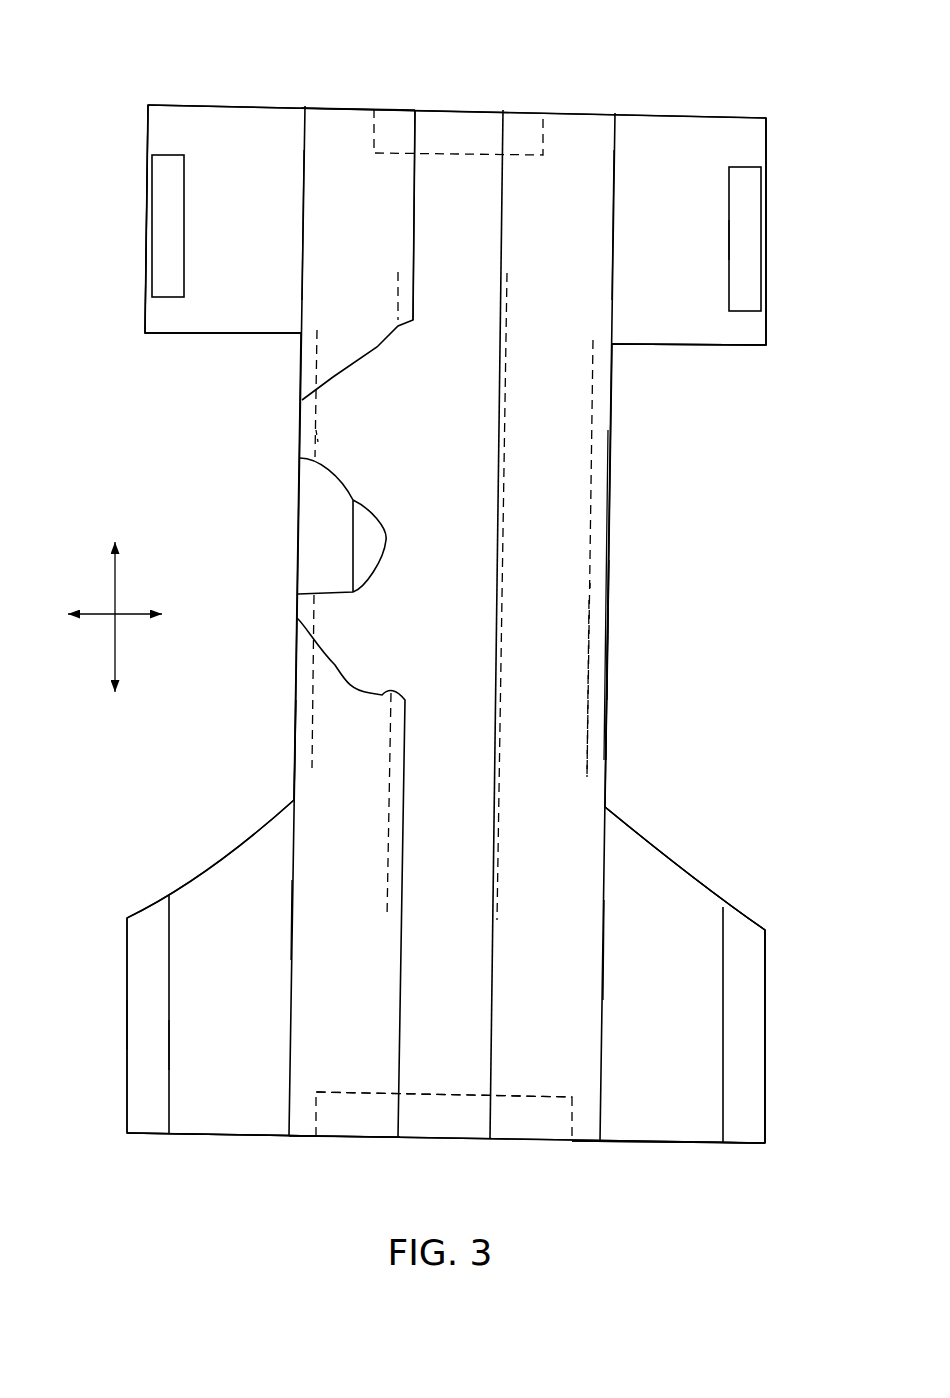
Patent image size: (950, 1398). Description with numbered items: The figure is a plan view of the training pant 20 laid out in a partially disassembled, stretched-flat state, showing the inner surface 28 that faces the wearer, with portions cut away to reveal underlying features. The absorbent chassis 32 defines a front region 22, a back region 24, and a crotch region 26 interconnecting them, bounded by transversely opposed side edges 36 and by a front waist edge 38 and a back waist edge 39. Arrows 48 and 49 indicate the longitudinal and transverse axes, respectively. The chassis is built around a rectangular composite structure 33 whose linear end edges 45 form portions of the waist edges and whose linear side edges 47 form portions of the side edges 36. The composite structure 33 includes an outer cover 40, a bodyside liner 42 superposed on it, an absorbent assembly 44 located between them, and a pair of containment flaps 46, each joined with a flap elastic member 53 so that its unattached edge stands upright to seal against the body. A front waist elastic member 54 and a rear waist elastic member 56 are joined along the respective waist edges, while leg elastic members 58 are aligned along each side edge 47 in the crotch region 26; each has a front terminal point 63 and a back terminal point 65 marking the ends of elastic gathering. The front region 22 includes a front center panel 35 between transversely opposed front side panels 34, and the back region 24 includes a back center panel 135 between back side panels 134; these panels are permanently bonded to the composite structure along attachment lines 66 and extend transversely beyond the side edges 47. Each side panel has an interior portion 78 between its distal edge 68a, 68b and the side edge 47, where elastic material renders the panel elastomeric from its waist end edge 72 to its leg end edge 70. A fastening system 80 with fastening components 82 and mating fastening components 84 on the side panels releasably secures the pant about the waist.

The training pant 20 is at (219, 105).
The front region 22 is at (146, 153).
The back region 24 is at (740, 890).
The crotch region 26 is at (618, 677).
The inner surface 28 is at (650, 1142).
The absorbent chassis 32 is at (607, 648).
The rectangular composite structure 33 is at (612, 223).
The front side panels 34 is at (723, 142).
The front center panel 35 is at (387, 182).
The side edges 36 is at (295, 720).
The front waist edge 38 is at (357, 107).
The back waist edge 39 is at (305, 1137).
The outer cover 40 is at (347, 585).
The bodyside liner 42 is at (407, 447).
The absorbent assembly 44 is at (362, 563).
The linear end edges 45 is at (588, 113).
The containment flaps 46 is at (413, 200).
The linear side edges 47 is at (302, 186).
The longitudinal axis arrow 48 is at (112, 583).
The transverse axis arrow 49 is at (97, 618).
The flap elastic member 53 is at (405, 288).
The front waist elastic member 54 is at (463, 117).
The rear waist elastic member 56 is at (540, 1127).
The leg elastic members 58 is at (316, 440).
The front terminal point 63 is at (318, 333).
The back terminal point 65 is at (313, 770).
The attachment lines 66 is at (302, 278).
The distal edge 68a is at (145, 293).
The distal edge 68b is at (125, 1084).
The leg end edge 70 is at (262, 335).
The waist end edge 72 is at (269, 107).
The interior portion 78 is at (702, 240).
The fastening system 80 is at (762, 219).
The fastening components 82 is at (152, 212).
The mating fastening components 84 is at (150, 990).
The back side panels 134 is at (200, 1004).
The back center panel 135 is at (355, 1055).